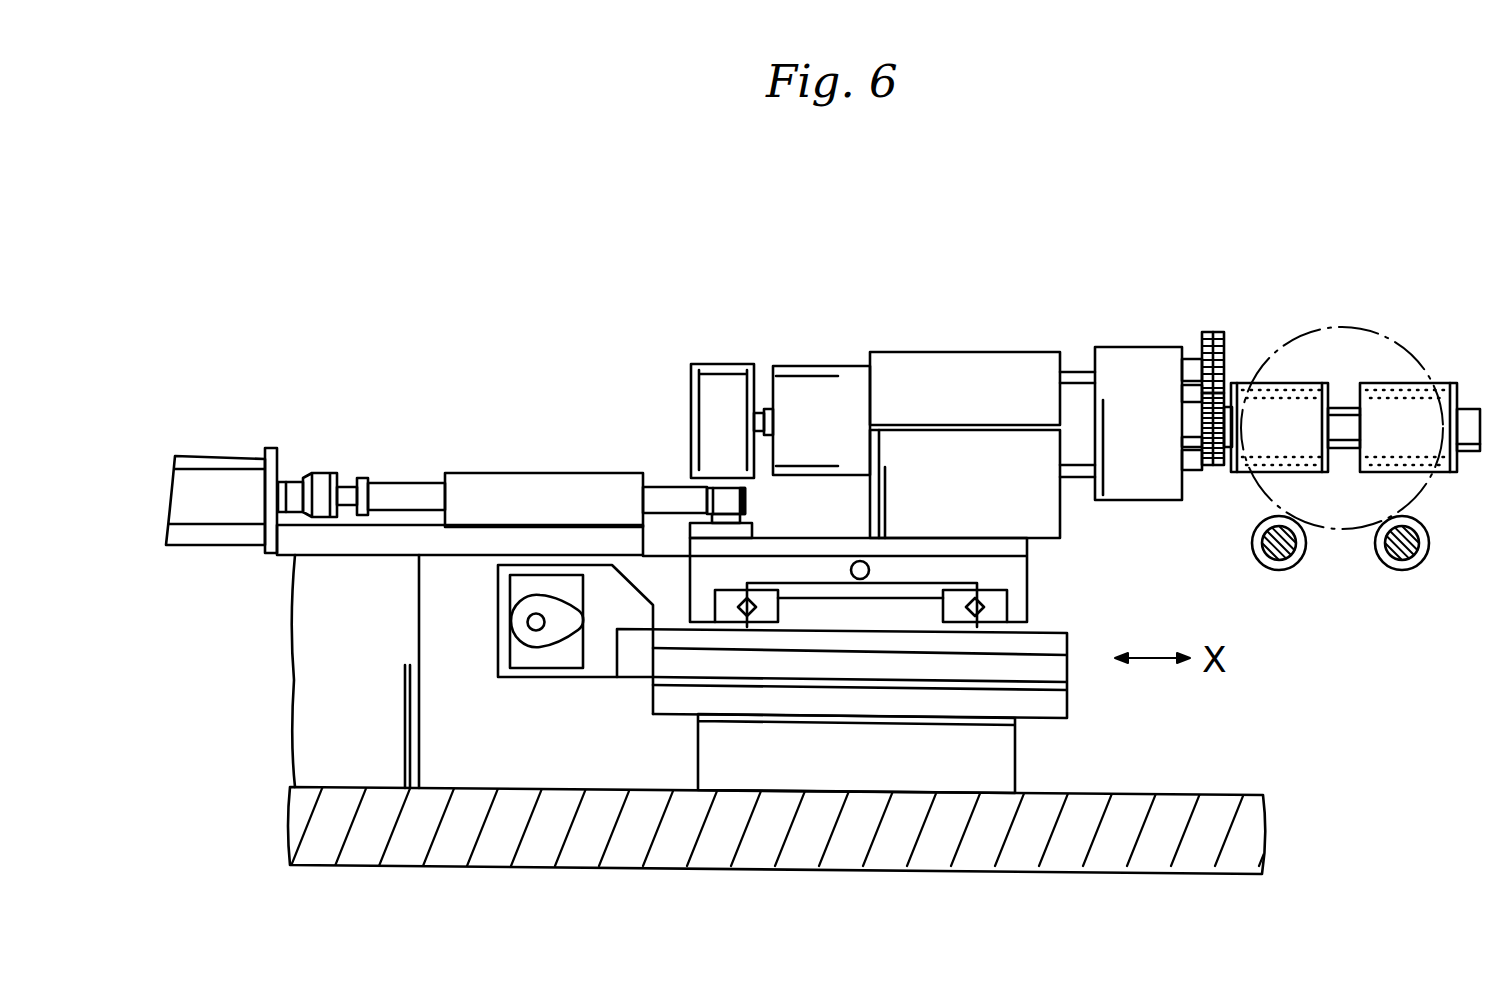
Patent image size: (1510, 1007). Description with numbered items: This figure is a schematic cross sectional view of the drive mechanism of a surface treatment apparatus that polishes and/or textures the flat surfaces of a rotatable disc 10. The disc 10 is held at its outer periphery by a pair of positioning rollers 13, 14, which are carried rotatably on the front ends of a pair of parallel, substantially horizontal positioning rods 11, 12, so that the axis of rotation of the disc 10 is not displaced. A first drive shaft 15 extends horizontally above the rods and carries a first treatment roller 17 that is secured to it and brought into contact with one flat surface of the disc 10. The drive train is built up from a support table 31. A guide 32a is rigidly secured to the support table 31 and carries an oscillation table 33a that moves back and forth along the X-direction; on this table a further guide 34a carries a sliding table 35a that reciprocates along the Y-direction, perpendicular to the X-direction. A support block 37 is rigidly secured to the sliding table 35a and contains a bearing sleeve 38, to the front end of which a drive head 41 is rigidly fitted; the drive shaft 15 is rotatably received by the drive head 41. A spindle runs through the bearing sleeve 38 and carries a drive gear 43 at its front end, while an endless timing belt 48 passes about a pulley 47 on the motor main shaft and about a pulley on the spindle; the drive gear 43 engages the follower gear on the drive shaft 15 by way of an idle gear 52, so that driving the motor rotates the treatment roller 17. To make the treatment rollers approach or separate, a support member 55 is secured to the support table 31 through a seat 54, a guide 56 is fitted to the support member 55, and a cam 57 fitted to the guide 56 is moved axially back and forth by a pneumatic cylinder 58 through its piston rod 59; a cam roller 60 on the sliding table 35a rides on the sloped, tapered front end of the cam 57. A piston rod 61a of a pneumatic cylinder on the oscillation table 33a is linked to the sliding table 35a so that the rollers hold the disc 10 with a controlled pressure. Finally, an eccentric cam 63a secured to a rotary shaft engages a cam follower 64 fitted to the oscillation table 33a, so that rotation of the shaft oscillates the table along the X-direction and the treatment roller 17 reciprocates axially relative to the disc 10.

The rotatable disc 10 is at (1402, 343).
The positioning rod 11 is at (1405, 555).
The positioning rod 12 is at (1272, 550).
The positioning roller 13 is at (1425, 550).
The positioning roller 14 is at (1300, 555).
The first drive shaft 15 is at (1468, 455).
The first treatment roller 17 is at (1420, 392).
The support table 31 is at (1222, 810).
The guide 32a is at (1003, 757).
The oscillation table 33a is at (1058, 672).
The guide 34a is at (920, 630).
The sliding table 35a is at (1027, 545).
The support block 37 is at (986, 368).
The bearing sleeve 38 is at (803, 375).
The drive head 41 is at (1135, 488).
The drive gear 43 is at (1208, 466).
The pulley 47 is at (685, 375).
The timing belt 48 is at (723, 368).
The idle gear 52 is at (1223, 333).
The seat 54 is at (387, 740).
The support member 55 is at (352, 545).
The guide 56 is at (515, 475).
The cam 57 is at (678, 497).
The pneumatic cylinder 58 is at (193, 540).
The piston rod 59 is at (393, 490).
The cam roller 60 is at (746, 494).
The piston rod 61a is at (860, 583).
The eccentric cam 63a is at (560, 628).
The cam follower 64 is at (603, 658).